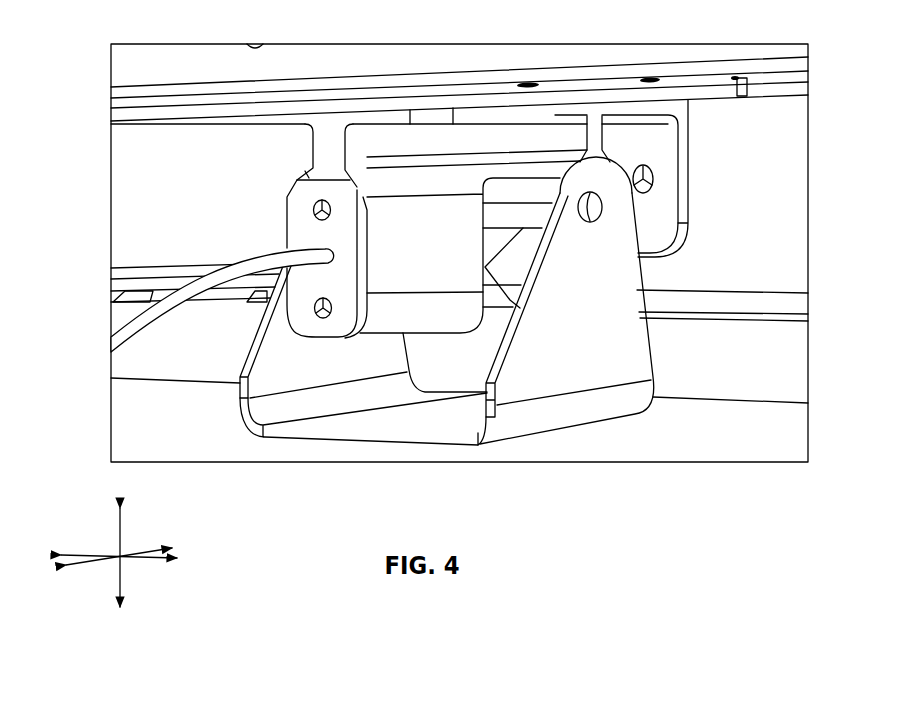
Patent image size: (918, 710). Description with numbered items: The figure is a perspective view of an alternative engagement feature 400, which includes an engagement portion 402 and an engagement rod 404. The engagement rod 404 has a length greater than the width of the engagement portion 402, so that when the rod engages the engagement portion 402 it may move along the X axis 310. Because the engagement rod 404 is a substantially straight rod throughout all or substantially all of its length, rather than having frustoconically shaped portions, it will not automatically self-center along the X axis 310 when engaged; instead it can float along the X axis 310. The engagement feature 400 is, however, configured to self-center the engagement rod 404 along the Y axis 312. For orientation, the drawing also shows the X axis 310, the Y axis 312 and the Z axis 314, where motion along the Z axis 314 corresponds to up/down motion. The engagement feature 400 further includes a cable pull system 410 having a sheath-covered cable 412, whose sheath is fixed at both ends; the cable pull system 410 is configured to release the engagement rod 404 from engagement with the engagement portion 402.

The engagement feature 400 is at (131, 171).
The engagement portion 402 is at (313, 137).
The engagement rod 404 is at (515, 205).
The cable pull system 410 is at (279, 210).
The sheath-covered cable 412 is at (118, 336).
The X axis 310 is at (150, 560).
The Y axis 312 is at (91, 562).
The Z axis 314 is at (118, 527).